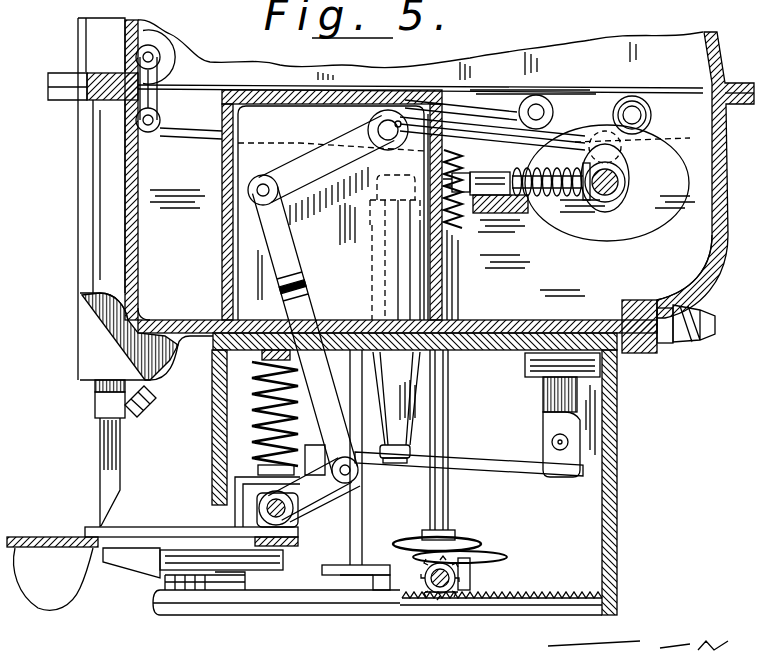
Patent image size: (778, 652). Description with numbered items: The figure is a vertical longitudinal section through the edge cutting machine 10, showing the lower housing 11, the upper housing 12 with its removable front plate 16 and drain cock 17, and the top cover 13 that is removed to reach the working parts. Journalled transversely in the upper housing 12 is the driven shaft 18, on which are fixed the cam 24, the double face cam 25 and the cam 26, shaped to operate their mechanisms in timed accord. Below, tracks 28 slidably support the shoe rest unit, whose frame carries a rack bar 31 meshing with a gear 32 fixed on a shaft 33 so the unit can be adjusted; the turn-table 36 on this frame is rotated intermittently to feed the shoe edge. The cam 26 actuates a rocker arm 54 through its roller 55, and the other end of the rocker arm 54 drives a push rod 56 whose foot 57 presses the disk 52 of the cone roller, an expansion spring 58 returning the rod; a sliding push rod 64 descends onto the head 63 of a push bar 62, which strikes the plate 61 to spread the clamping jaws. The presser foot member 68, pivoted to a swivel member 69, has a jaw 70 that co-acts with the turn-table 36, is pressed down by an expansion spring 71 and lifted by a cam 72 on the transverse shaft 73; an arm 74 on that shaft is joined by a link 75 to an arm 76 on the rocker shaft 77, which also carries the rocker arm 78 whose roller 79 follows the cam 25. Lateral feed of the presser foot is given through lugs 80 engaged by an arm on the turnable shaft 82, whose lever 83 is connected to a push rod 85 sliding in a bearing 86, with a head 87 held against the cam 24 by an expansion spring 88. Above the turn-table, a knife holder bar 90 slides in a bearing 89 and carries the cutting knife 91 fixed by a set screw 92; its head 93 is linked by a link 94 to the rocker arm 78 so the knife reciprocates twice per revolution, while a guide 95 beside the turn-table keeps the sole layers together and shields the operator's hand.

The edge cutting machine 10 is at (448, 419).
The lower housing 11 is at (618, 545).
The upper housing 12 is at (648, 270).
The top cover 13 is at (720, 63).
The removable front plate 16 is at (84, 230).
The drain cock 17 is at (690, 337).
The driven rotatable shaft 18 is at (625, 178).
The cam 24 is at (610, 232).
The double face cam 25 is at (672, 205).
The cam 26 is at (690, 138).
The tracks 28 is at (590, 603).
The rack bar 31 is at (540, 593).
The gear 32 is at (460, 582).
The shaft 33 is at (433, 595).
The turn-table 36 is at (258, 552).
The disk 52 is at (505, 553).
The rocker arm 54 is at (570, 108).
The roller 55 is at (650, 108).
The push rod 56 is at (440, 373).
The foot 57 is at (475, 538).
The expansion spring 58 is at (455, 208).
The plate 61 is at (372, 452).
The push bar 62 is at (370, 583).
The head 63 is at (372, 565).
The sliding push rod 64 is at (342, 498).
The presser foot member 68 is at (483, 478).
The swivel member 69 is at (560, 400).
The jaw 70 is at (90, 527).
The expansion spring 71 is at (253, 420).
The cam 72 is at (265, 492).
The transverse shaft 73 is at (293, 518).
The arm 74 is at (313, 488).
The link 75 is at (287, 273).
The arm 76 is at (280, 160).
The rocker shaft 77 is at (368, 128).
The rocker arm 78 is at (212, 136).
The roller 79 is at (655, 135).
The upstanding lugs 80 is at (318, 428).
The turnable shaft 82 is at (386, 296).
The lever 83 is at (437, 137).
The push rod 85 is at (475, 172).
The bearing 86 is at (500, 183).
The head 87 is at (583, 200).
The expansion spring 88 is at (558, 197).
The bearing 89 is at (97, 347).
The knife holder bar 90 is at (97, 410).
The cutting knife 91 is at (118, 475).
The set screw 92 is at (150, 404).
The head 93 is at (162, 50).
The link 94 is at (156, 98).
The guide 95 is at (132, 562).